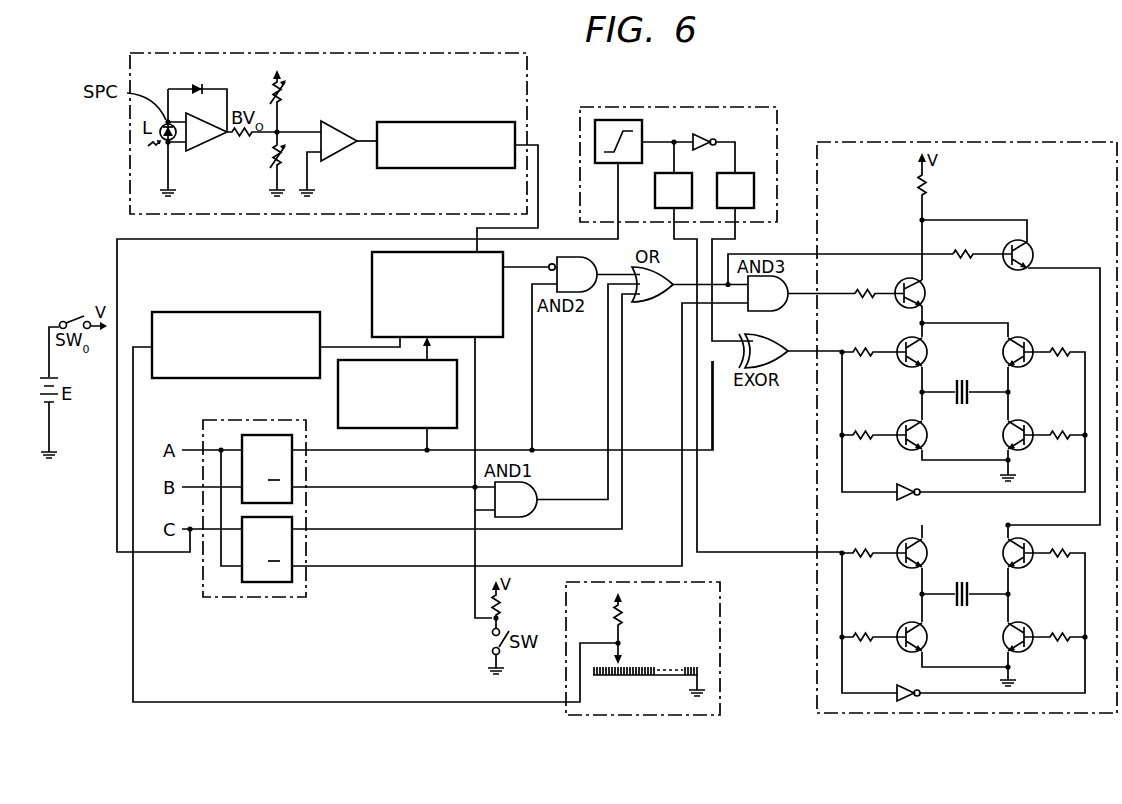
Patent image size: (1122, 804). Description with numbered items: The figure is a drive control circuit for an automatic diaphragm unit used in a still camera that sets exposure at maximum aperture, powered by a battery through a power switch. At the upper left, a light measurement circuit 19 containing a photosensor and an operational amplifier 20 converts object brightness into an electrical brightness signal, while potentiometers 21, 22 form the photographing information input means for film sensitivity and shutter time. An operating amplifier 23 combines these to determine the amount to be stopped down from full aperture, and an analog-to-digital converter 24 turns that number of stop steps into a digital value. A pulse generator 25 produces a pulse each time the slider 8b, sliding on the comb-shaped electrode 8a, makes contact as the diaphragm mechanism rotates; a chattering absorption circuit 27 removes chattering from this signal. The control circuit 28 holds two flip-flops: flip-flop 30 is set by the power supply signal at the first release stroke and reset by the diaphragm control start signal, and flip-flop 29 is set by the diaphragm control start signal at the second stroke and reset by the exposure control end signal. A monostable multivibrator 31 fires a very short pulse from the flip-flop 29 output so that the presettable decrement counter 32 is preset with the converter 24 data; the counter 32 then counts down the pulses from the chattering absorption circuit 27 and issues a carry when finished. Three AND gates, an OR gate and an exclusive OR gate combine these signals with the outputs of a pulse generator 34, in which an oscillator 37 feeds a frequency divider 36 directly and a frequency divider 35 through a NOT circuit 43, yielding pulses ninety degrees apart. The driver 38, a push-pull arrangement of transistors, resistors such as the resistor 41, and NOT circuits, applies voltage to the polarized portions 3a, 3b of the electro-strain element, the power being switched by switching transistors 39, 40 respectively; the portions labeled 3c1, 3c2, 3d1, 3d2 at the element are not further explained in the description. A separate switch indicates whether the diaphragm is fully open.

The light measurement circuit 19 is at (313, 53).
The operational amplifier 20 is at (213, 146).
The potentiometer 21 is at (286, 92).
The potentiometer 22 is at (272, 168).
The operating amplifier 23 is at (342, 133).
The analog-to-digital converter 24 is at (427, 122).
The pulse generator 25 is at (722, 662).
The chattering absorption circuit 27 is at (255, 312).
The stop operation control circuit 28 is at (207, 597).
The flip-flop 29 is at (252, 435).
The flip-flop 30 is at (283, 582).
The monostable multivibrator 31 is at (338, 408).
The presettable decrement counter 32 is at (505, 264).
The pulse generator 34 is at (642, 107).
The frequency divider 35 is at (754, 193).
The frequency divider 36 is at (655, 194).
The oscillator 37 is at (613, 120).
The driver 38 is at (866, 142).
The switching transistor 39 is at (926, 292).
The switching transistor 40 is at (1030, 243).
The resistor 41 is at (928, 186).
The NOT circuit 43 is at (708, 138).
The polarized portion of electro-strain element 3a is at (963, 418).
The polarized portion of electro-strain element 3b is at (963, 611).
The electrode of first piezoelectric element 3c1 is at (956, 398).
The electrode of first piezoelectric element 3c2 is at (966, 400).
The electrode of second piezoelectric element 3d1 is at (956, 600).
The electrode of second piezoelectric element 3d2 is at (966, 602).
The electrode 8a is at (622, 675).
The slider 8b is at (622, 652).